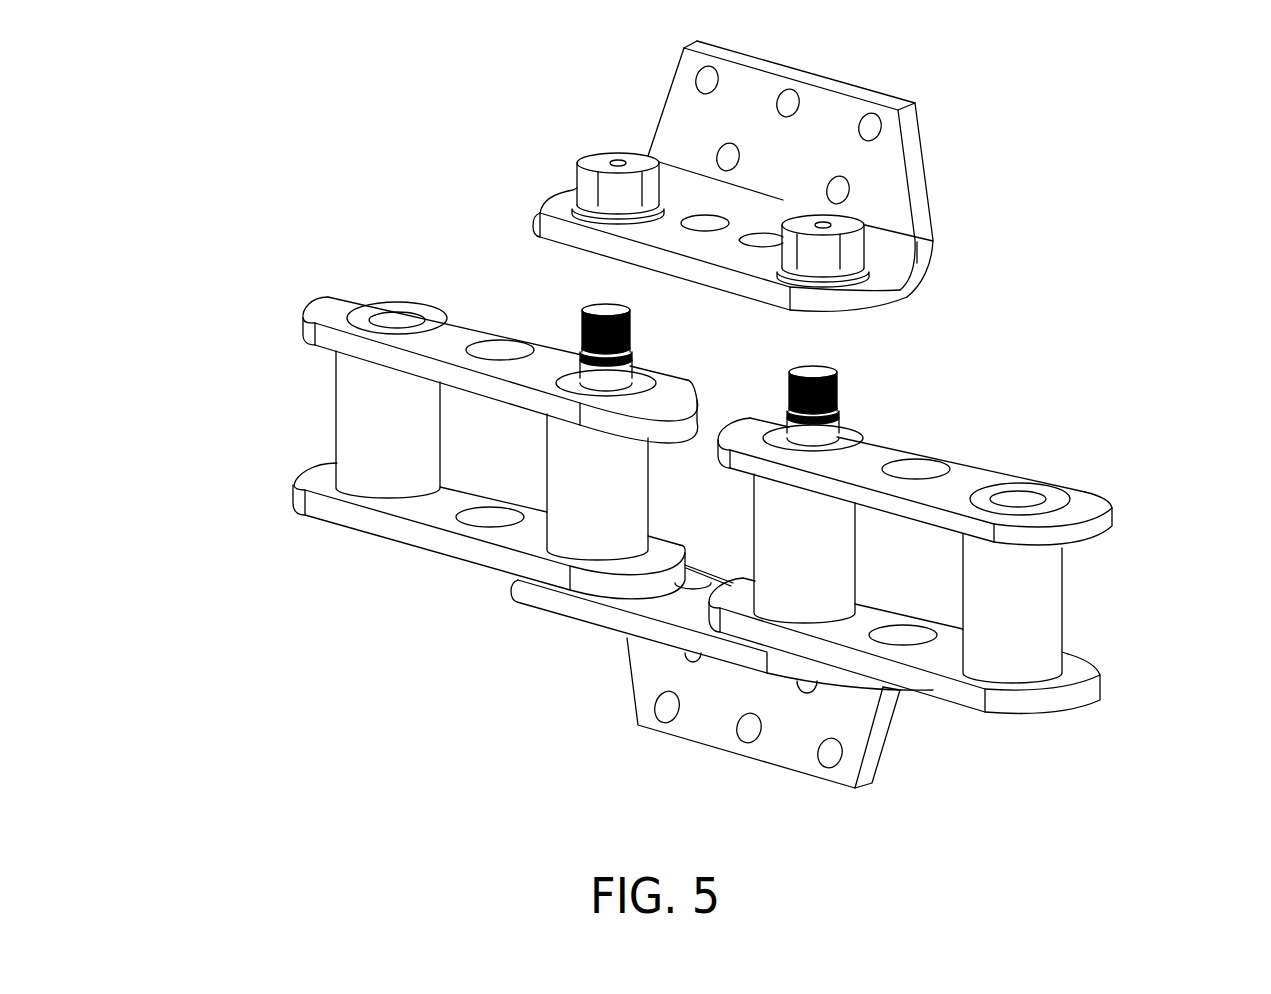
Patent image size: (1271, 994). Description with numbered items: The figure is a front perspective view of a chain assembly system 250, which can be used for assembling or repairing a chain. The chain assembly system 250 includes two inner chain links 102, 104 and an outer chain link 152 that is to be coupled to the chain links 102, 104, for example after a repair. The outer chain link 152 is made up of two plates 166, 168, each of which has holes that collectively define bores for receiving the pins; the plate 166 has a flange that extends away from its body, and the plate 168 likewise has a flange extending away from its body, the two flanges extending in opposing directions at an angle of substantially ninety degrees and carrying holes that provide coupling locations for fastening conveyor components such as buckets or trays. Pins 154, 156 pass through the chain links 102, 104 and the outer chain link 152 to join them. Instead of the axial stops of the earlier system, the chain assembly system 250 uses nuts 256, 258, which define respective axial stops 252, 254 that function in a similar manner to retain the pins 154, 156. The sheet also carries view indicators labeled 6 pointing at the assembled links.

The chain link 102 is at (422, 434).
The chain link 104 is at (928, 540).
The chain link 152 is at (840, 165).
The pin 154 is at (595, 375).
The pin 156 is at (820, 432).
The plate 166 is at (647, 628).
The plate 168 is at (587, 240).
The chain assembly system 250 is at (608, 172).
The axial stop 252 is at (595, 133).
The axial stop 254 is at (860, 201).
The nut 256 is at (547, 156).
The nut 258 is at (853, 257).
The section line 6- 6 is at (303, 286).